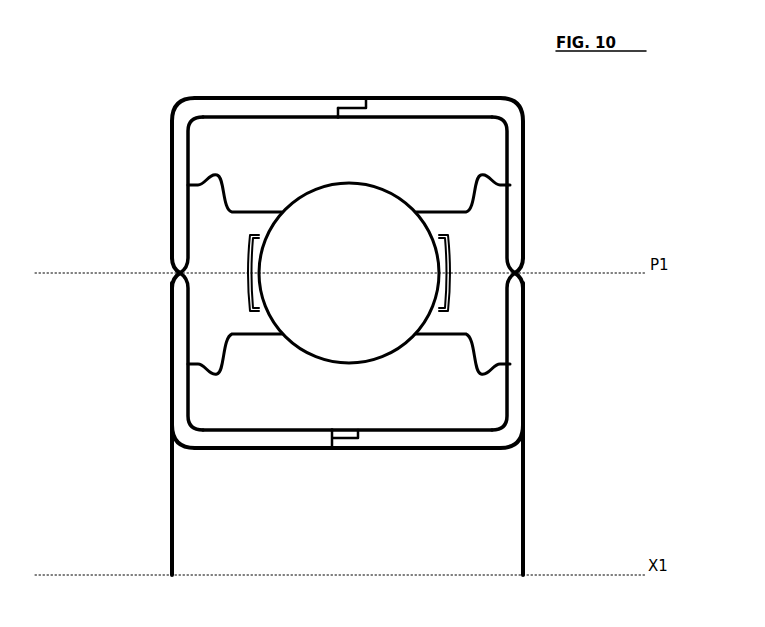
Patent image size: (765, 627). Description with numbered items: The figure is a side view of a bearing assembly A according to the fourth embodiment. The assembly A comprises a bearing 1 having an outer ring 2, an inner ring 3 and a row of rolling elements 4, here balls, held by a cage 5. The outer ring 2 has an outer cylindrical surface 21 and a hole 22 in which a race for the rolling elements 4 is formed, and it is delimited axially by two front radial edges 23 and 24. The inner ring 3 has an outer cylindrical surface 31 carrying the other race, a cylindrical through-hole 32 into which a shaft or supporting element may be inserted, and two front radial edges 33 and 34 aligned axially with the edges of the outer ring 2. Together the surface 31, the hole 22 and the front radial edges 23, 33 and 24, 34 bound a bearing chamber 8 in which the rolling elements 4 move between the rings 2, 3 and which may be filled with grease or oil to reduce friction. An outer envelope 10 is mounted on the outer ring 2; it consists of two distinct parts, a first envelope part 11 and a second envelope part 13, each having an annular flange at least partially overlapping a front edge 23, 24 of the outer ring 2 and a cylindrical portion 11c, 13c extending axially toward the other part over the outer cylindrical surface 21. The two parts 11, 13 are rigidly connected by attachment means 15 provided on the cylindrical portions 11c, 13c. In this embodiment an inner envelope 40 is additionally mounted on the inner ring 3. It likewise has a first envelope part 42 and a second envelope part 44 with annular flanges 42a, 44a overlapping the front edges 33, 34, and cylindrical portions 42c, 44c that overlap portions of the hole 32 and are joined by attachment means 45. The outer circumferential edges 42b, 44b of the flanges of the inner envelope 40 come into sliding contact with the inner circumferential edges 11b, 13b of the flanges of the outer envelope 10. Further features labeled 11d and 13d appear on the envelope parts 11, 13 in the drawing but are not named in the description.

The assembly A is at (638, 110).
The outer envelope 10 is at (118, 104).
The inner envelope 40 is at (107, 437).
The bearing 1 is at (232, 437).
The outer ring 2 is at (421, 127).
The inner ring 3 is at (371, 432).
The rolling elements 4 is at (349, 273).
The cage 5 is at (250, 302).
The bearing chamber 8 is at (510, 200).
The first envelope part 11 is at (538, 127).
The inner circumferential edge 11b is at (523, 276).
The cylindrical portion 11c is at (462, 116).
The inner top surface 11d is at (330, 120).
The second envelope part 13 is at (169, 100).
The inner circumferential edge 13b is at (186, 275).
The cylindrical portion 13c is at (247, 99).
The top hook portion 13d is at (366, 104).
The attachment means 15 is at (347, 96).
The outer cylindrical surface 21 is at (393, 116).
The hole 22 is at (450, 215).
The front radial edge 23 is at (510, 160).
The front radial edge 24 is at (185, 165).
The outer cylindrical surface 31 is at (458, 326).
The cylindrical through-hole 32 is at (300, 431).
The front radial edge 33 is at (510, 385).
The front radial edge 34 is at (187, 385).
The first envelope part 42 is at (527, 434).
The annular flange 42a is at (525, 318).
The outer circumferential edge 42b is at (500, 275).
The cylindrical portion 42c is at (446, 449).
The second envelope part 44 is at (165, 435).
The annular flange 44a is at (170, 340).
The outer circumferential edge 44b is at (172, 273).
The cylindrical portion 44c is at (250, 449).
The attachment means 45 is at (342, 451).